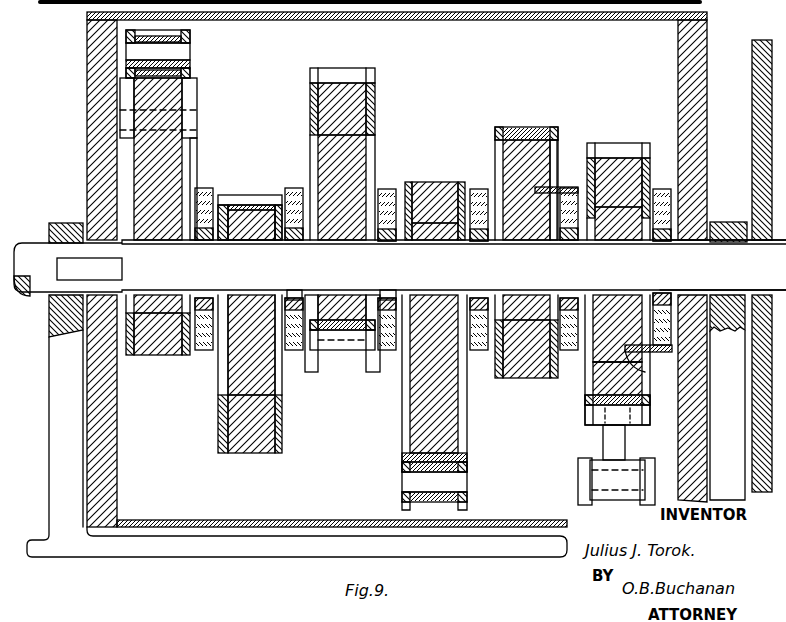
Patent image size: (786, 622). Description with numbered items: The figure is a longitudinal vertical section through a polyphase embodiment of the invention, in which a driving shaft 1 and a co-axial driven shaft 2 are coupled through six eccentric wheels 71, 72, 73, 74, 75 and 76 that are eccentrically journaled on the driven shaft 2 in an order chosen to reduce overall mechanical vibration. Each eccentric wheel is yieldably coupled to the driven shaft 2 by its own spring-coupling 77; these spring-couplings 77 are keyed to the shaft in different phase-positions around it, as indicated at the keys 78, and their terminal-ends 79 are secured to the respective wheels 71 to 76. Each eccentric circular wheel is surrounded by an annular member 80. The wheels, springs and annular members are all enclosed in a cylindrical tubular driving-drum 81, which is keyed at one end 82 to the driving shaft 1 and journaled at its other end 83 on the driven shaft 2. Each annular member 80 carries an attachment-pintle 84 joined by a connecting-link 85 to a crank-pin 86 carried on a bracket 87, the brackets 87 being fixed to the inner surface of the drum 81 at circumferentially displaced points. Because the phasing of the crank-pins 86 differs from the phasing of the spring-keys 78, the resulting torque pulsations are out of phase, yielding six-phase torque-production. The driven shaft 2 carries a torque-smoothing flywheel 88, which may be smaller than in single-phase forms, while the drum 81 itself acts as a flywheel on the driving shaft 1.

The driving shaft 1 is at (30, 248).
The driven shaft 2 is at (730, 240).
The eccentric wheel 71 is at (175, 150).
The eccentric wheel 72 is at (320, 148).
The eccentric wheel 73 is at (625, 242).
The eccentric wheel 74 is at (448, 242).
The eccentric wheel 75 is at (258, 242).
The eccentric wheel 76 is at (508, 152).
The spring-coupling 77 is at (294, 189).
The spring-key 78 is at (294, 290).
The terminal-end 79 is at (194, 196).
The annular member 80 is at (190, 72).
The driving-drum 81 is at (482, 19).
The end of driving-drum 82 is at (100, 243).
The end of driving-drum 83 is at (697, 242).
The attachment-pintle 84 is at (186, 56).
The connecting-link 85 is at (186, 38).
The crank-pin 86 is at (196, 118).
The bracket 87 is at (197, 100).
The torque-smoothing flywheel 88 is at (752, 95).